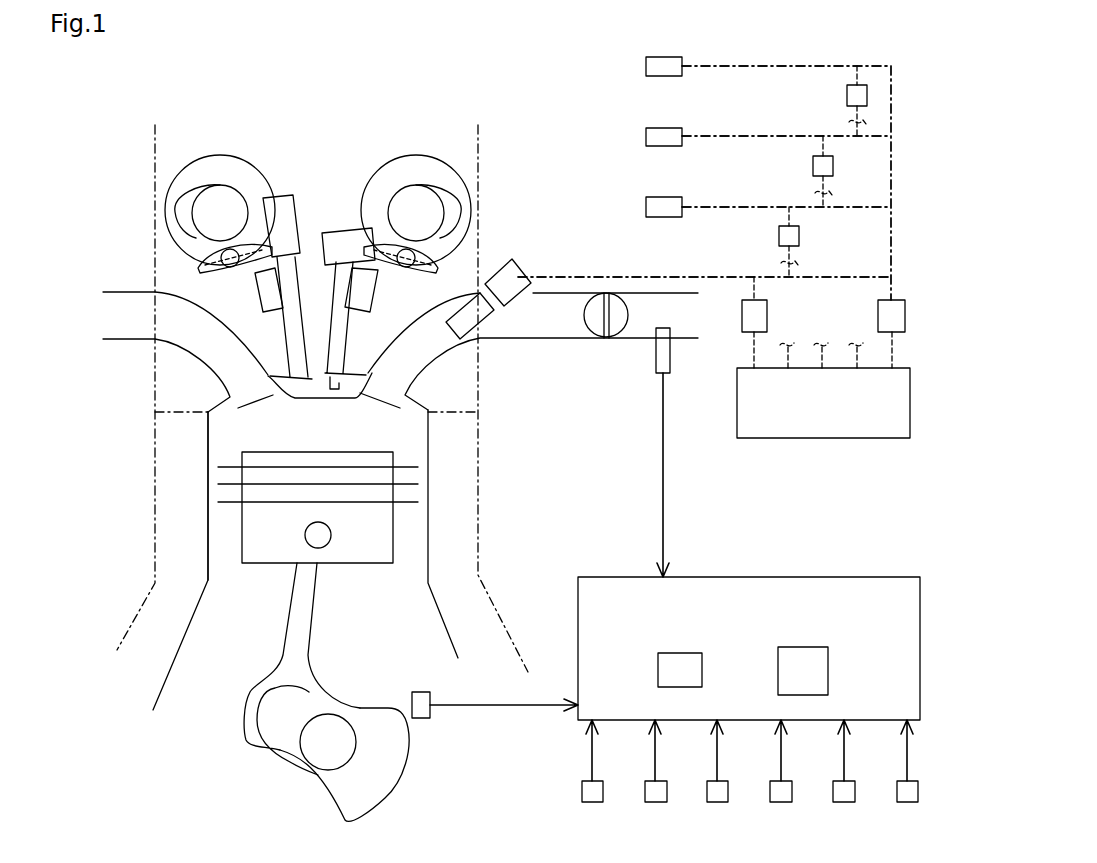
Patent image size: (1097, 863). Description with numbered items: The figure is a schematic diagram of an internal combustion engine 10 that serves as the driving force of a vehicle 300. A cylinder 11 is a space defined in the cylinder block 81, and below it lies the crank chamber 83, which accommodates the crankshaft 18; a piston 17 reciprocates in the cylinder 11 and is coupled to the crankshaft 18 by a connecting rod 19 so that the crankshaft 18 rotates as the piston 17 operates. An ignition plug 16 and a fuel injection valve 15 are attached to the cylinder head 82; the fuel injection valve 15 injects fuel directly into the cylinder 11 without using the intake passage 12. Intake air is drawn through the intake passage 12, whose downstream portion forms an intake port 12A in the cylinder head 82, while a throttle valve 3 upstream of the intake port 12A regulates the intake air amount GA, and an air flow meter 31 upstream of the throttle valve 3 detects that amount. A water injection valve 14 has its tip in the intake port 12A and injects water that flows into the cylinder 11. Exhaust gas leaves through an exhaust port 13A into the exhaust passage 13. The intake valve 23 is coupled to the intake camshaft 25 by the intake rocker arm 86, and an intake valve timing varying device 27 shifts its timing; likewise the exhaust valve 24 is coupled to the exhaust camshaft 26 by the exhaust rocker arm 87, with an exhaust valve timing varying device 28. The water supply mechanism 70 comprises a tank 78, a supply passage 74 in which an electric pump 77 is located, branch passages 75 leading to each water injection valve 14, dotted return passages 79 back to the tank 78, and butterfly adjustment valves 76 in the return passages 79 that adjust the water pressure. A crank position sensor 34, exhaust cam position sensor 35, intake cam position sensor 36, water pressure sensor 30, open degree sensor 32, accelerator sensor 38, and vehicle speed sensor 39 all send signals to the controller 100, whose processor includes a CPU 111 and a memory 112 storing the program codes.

The internal combustion engine 10 is at (94, 183).
The cylinder 11 is at (208, 437).
The intake passage 12 is at (523, 340).
The intake port 12A is at (362, 383).
The exhaust passage 13 is at (103, 339).
The exhaust port 13A is at (274, 382).
The water injection valve 14 is at (520, 262).
The fuel injection valve 15 is at (288, 197).
The ignition plug 16 is at (340, 229).
The piston 17 is at (358, 565).
The crankshaft 18 is at (313, 757).
The connecting rod 19 is at (282, 650).
The intake valve 23 is at (403, 360).
The exhaust valve 24 is at (237, 355).
The intake camshaft 25 is at (398, 198).
The exhaust camshaft 26 is at (200, 229).
The intake valve timing varying device 27 is at (472, 200).
The exhaust valve timing varying device 28 is at (208, 158).
The throttle valve 3 is at (627, 326).
The water pressure sensor 30 is at (590, 802).
The air flow meter 31 is at (672, 345).
The open degree sensor 32 is at (653, 802).
The crank position sensor 34 is at (418, 692).
The exhaust cam position sensor 35 is at (715, 802).
The intake cam position sensor 36 is at (778, 802).
The accelerator sensor 38 is at (841, 802).
The vehicle speed sensor 39 is at (905, 802).
The water supply mechanism 70 is at (846, 52).
The supply passage 74 is at (891, 245).
The branch passage 75 is at (735, 66).
The adjustment valve 76 is at (847, 95).
The pump 77 is at (905, 313).
The tank 78 is at (880, 438).
The return passage 79 is at (845, 114).
The cylinder block 81 is at (155, 478).
The cylinder head 82 is at (481, 136).
The crank chamber 83 is at (188, 700).
The intake rocker arm 86 is at (428, 252).
The exhaust rocker arm 87 is at (210, 252).
The controller 100 is at (858, 572).
The CPU 111 is at (680, 653).
The memory 112 is at (808, 647).
The vehicle 300 is at (914, 48).